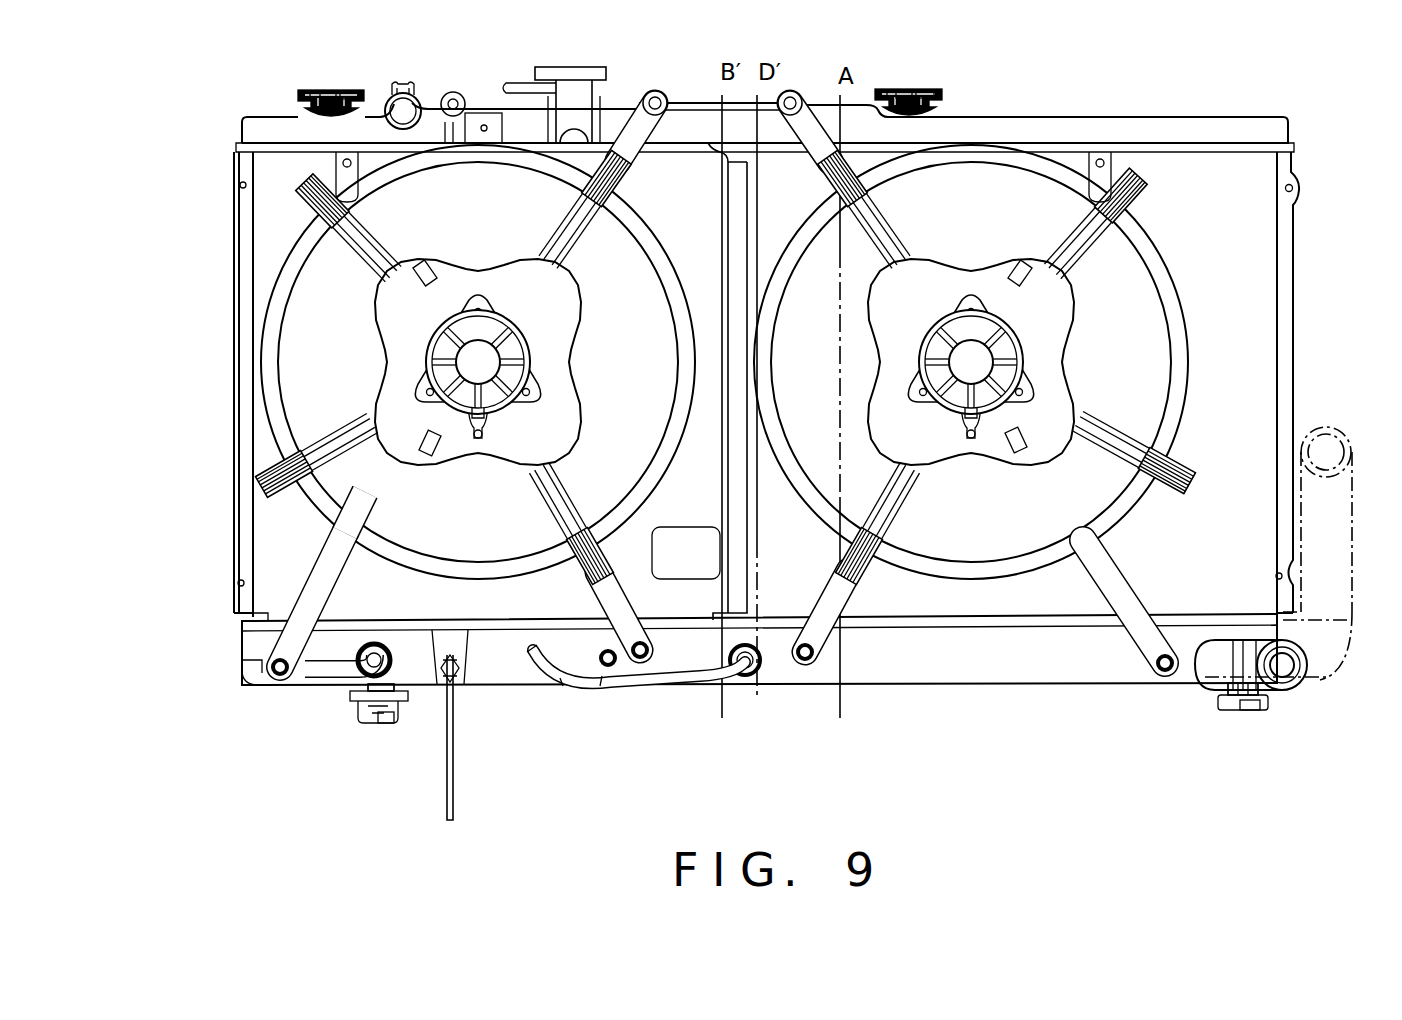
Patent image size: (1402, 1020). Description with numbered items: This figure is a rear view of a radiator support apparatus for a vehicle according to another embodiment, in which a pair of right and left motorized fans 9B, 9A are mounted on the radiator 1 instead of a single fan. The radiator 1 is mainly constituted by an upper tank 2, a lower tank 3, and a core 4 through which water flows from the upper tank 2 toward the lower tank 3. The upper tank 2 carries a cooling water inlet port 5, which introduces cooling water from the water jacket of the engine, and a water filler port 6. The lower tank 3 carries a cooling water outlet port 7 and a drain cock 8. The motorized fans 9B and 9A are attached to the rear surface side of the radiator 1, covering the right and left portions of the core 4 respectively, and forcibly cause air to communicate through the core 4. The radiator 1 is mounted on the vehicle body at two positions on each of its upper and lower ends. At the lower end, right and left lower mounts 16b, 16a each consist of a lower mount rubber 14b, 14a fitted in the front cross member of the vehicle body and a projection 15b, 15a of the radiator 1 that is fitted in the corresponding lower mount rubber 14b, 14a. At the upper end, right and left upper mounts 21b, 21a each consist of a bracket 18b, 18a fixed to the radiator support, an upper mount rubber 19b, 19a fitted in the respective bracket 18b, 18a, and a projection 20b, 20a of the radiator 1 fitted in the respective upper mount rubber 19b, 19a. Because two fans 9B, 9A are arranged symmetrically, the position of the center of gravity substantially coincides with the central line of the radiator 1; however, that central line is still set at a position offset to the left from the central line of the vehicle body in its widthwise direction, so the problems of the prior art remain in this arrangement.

The radiator 1 is at (192, 259).
The upper tank 2 is at (1058, 118).
The lower tank 3 is at (780, 684).
The core 4 is at (1295, 372).
The cooling water inlet port 5 is at (410, 104).
The water filler port 6 is at (594, 78).
The cooling water outlet port 7 is at (1296, 688).
The drain cock 8 is at (458, 690).
The motorized fan 9A is at (282, 378).
The motorized fan 9B is at (1174, 356).
The lower mount rubber 14a is at (372, 716).
The lower mount rubber 14b is at (1230, 714).
The projection 15a is at (384, 722).
The projection 15b is at (1252, 712).
The lower mount 16a is at (349, 718).
The lower mount 16b is at (1216, 710).
The bracket 18a is at (300, 95).
The bracket 18b is at (878, 92).
The upper mount rubber 19a is at (348, 90).
The upper mount rubber 19b is at (928, 92).
The projection 20a is at (326, 92).
The projection 20b is at (896, 88).
The upper mount 21a is at (336, 90).
The upper mount 21b is at (912, 89).